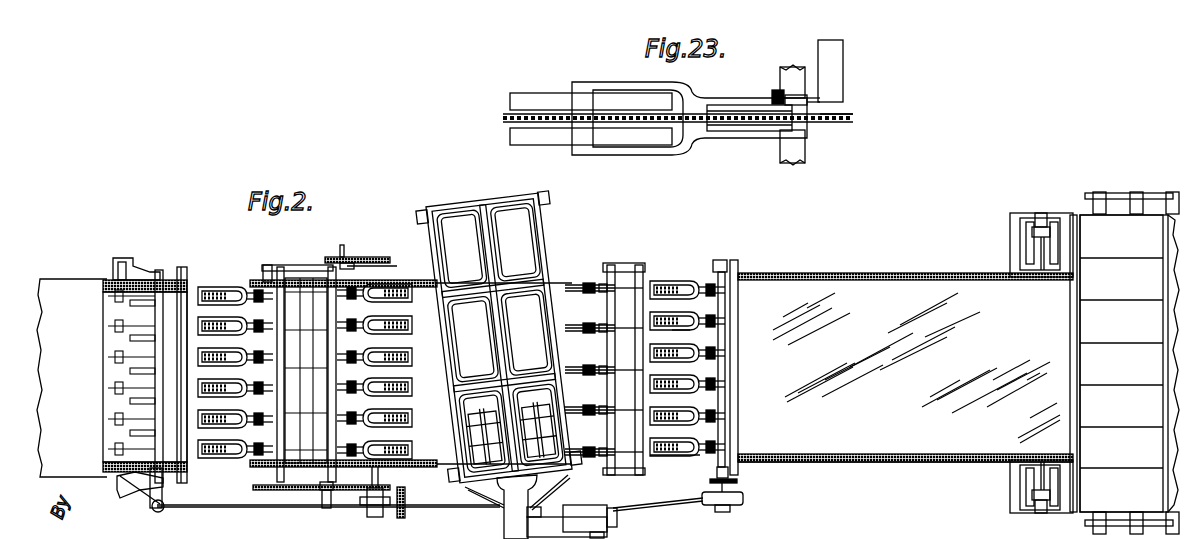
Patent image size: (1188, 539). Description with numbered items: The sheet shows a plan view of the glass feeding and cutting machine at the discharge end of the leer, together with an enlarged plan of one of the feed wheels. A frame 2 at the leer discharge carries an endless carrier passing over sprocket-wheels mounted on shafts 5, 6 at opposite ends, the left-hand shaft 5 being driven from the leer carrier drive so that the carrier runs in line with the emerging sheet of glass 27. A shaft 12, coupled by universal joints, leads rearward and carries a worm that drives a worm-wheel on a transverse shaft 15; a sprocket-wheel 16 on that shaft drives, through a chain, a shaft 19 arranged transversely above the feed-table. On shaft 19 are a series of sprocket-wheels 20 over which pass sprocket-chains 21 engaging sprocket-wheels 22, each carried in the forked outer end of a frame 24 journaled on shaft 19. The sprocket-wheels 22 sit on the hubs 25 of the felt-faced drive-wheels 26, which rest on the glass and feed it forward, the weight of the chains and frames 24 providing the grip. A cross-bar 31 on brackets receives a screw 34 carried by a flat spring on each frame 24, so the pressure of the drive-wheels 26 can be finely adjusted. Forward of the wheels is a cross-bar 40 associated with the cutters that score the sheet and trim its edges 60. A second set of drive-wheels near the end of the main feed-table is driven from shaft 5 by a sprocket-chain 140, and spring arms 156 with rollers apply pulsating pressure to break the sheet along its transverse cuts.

In FIG. 2, the frame 2 is at (1124, 363).
In FIG. 2, the shaft 5 is at (342, 256).
In FIG. 2, the shaft 6 is at (1040, 465).
In FIG. 2, the shaft 12 is at (460, 504).
In FIG. 2, the shaft 15 is at (727, 258).
In FIG. 2, the sprocket-wheel 16 is at (738, 482).
In FIG. 2, the shaft 19 is at (724, 370).
In FIG. 23, the shaft 19 is at (806, 162).
In FIG. 23, the sprocket-wheels 20 is at (837, 119).
In FIG. 2, the sprocket-chains 21 is at (679, 282).
In FIG. 23, the sprocket-chains 21 is at (729, 110).
In FIG. 23, the sprocket-wheels 22 is at (562, 123).
In FIG. 2, the frames 24 is at (674, 333).
In FIG. 23, the frames 24 is at (735, 139).
In FIG. 23, the hubs 25 is at (587, 127).
In FIG. 2, the drive-wheels 26 is at (408, 322).
In FIG. 23, the drive-wheels 26 is at (545, 140).
In FIG. 2, the sheet of glass 27 is at (916, 368).
In FIG. 2, the cross-bar 31 is at (738, 362).
In FIG. 23, the cross-bar 31 is at (843, 58).
In FIG. 23, the screw 34 is at (783, 101).
In FIG. 2, the cross-bar 40 is at (643, 268).
In FIG. 2, the edges 60 is at (873, 273).
In FIG. 2, the sprocket-chain 140 is at (363, 257).
In FIG. 2, the spring arms 156 is at (135, 345).